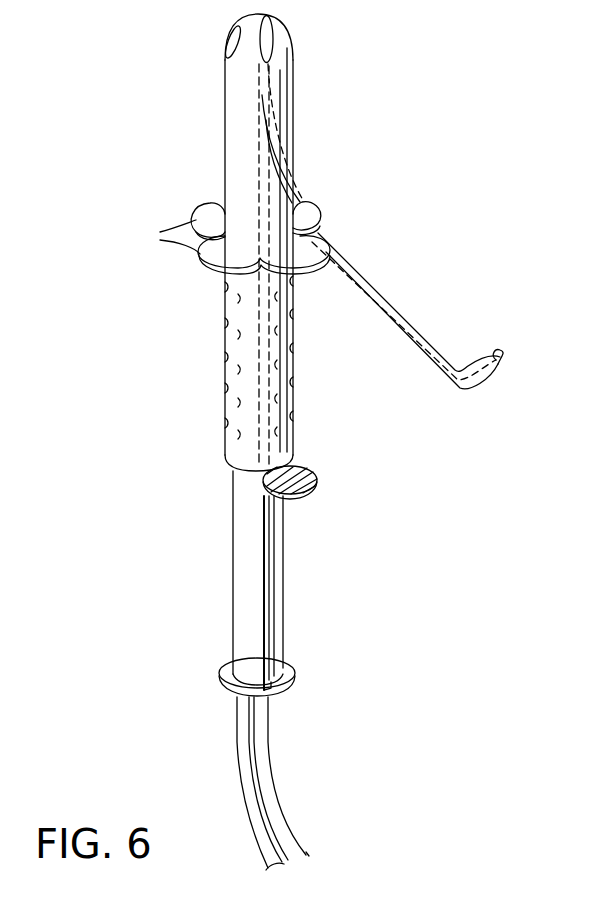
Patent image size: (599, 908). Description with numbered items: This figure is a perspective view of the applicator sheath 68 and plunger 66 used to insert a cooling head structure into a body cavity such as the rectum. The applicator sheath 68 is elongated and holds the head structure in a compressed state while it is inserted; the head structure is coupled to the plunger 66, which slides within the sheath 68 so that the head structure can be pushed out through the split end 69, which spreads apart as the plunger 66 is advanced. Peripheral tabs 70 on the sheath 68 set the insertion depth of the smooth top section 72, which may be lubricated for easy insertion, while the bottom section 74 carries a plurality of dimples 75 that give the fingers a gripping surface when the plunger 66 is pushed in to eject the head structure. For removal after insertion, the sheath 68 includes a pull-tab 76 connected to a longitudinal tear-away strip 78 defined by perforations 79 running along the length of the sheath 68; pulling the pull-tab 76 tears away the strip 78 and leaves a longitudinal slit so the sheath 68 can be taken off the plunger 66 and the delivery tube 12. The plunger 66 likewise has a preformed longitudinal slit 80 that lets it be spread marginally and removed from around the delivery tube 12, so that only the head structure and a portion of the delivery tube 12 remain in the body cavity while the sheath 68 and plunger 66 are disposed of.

The delivery tube 12 is at (276, 773).
The plunger 66 is at (250, 515).
The applicator sheath 68 is at (295, 88).
The split end 69 is at (279, 29).
The peripheral tabs 70 is at (229, 238).
The top section 72 is at (241, 104).
The bottom section 74 is at (237, 447).
The dimples 75 is at (240, 370).
The pull-tab 76 is at (500, 362).
The tear-away strip 78 is at (380, 298).
The perforations 79 is at (258, 152).
The longitudinal slit 80 is at (266, 622).